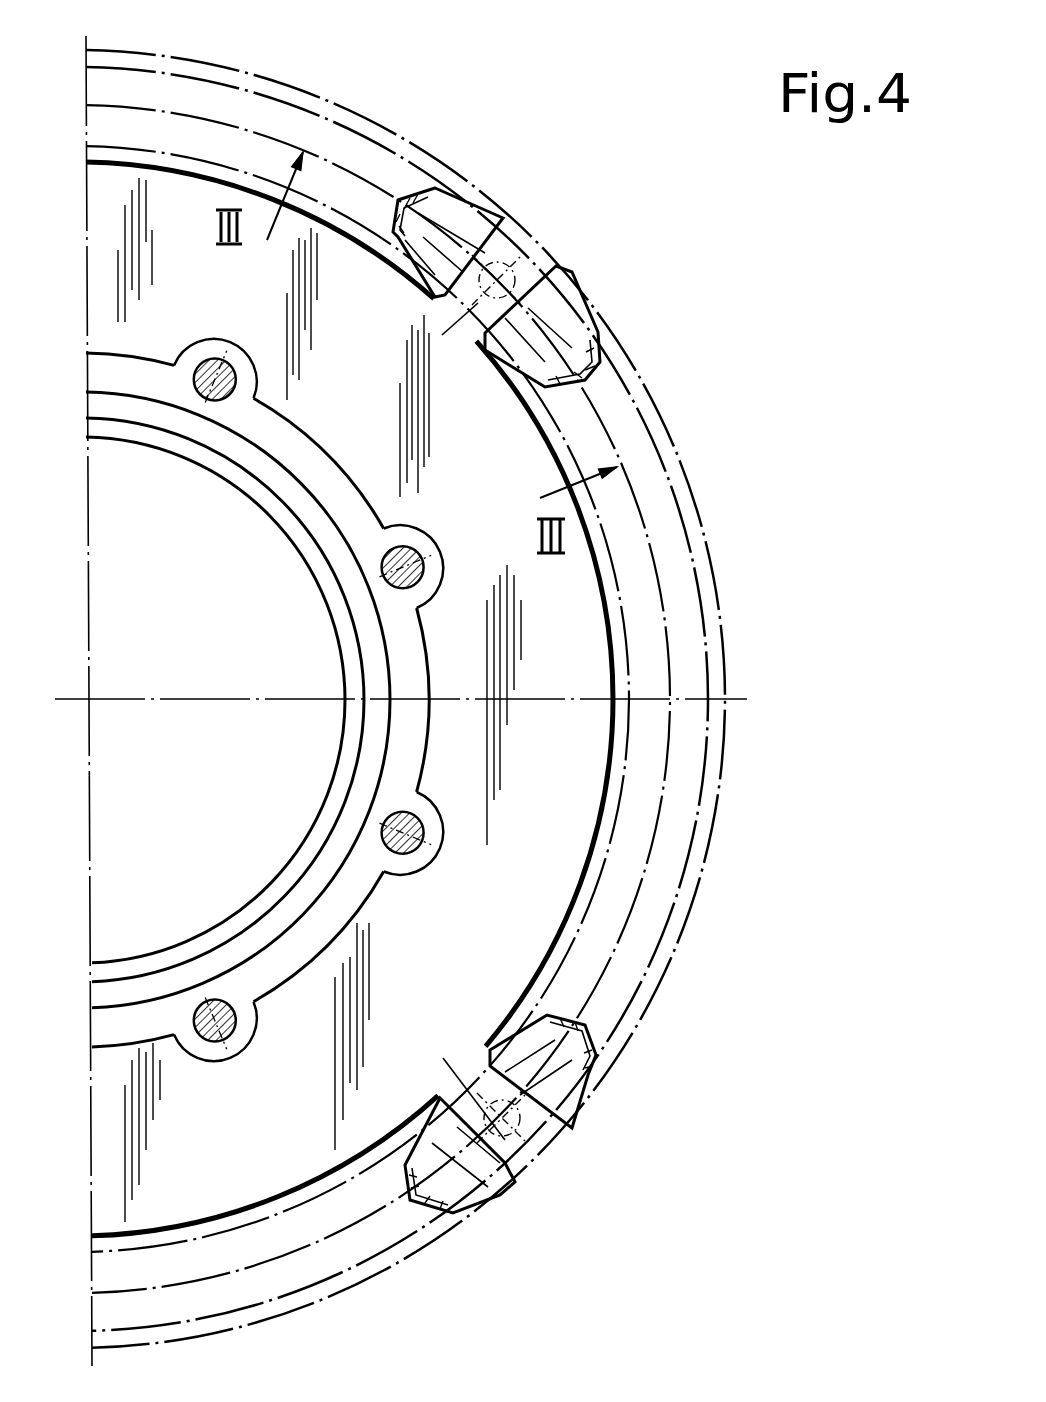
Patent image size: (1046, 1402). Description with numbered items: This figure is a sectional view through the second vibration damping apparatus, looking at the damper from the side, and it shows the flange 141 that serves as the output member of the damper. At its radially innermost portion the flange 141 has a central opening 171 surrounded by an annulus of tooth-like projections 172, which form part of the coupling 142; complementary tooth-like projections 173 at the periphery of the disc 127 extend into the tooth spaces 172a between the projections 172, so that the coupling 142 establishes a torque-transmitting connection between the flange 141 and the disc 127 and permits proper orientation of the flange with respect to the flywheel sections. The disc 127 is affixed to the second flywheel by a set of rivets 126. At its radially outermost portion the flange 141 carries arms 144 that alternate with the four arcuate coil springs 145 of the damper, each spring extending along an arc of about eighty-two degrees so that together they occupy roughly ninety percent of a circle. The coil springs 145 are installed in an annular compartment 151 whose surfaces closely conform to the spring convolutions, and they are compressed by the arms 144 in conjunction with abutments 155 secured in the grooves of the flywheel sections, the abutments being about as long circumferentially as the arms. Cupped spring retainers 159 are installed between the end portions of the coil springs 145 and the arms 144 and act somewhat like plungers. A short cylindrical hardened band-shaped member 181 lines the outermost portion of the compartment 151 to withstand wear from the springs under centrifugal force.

The coil spring 145 is at (375, 130).
The coupling 142 is at (237, 362).
The arms 144 is at (460, 278).
The abutments 155 is at (443, 335).
The central opening 171 is at (300, 425).
The tooth-like projections 172 is at (343, 455).
The tooth spaces 172a is at (412, 520).
The annular compartment 151 is at (607, 413).
The flange 141 is at (448, 852).
The rivets 126 is at (480, 850).
The tooth-like projections 173 is at (342, 908).
The disc 127 is at (515, 1035).
The cupped spring retainers 159 is at (563, 1130).
The band-shaped member 181 is at (557, 1152).